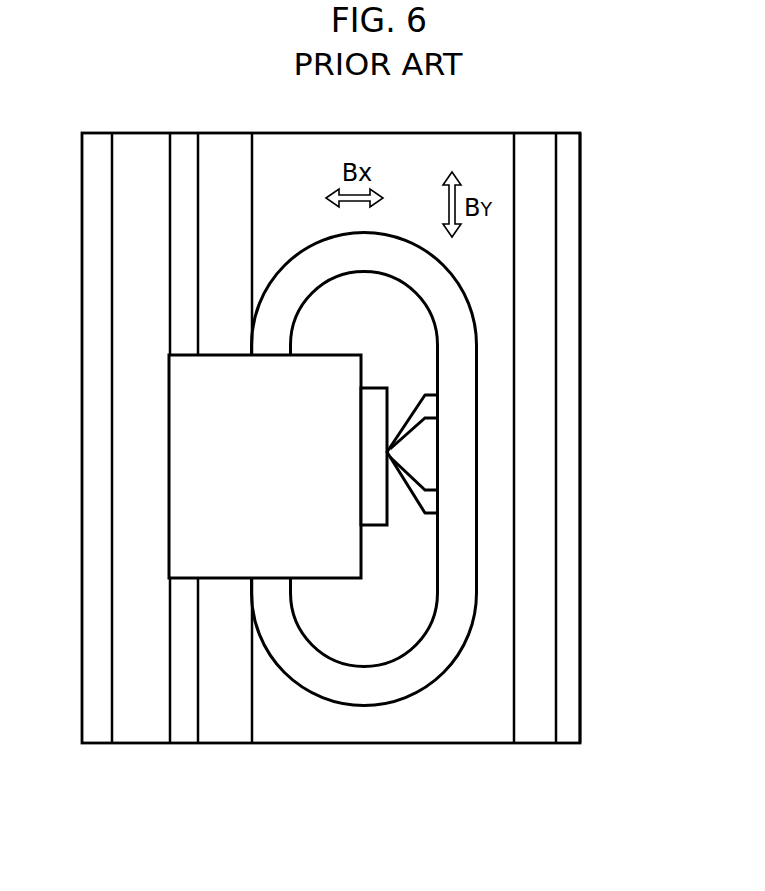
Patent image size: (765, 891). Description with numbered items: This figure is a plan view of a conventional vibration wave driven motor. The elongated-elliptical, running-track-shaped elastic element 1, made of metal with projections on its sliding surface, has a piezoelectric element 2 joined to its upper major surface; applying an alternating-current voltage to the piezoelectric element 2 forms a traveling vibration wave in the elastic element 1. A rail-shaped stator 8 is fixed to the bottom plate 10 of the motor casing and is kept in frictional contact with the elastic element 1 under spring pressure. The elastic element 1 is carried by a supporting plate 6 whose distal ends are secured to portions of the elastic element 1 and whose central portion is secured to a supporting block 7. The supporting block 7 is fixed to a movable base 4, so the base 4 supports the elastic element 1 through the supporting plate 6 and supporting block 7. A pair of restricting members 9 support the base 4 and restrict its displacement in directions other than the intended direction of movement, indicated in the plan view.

The elastic element 1 is at (477, 344).
The piezoelectric element 2 is at (455, 403).
The movable base 4 is at (181, 440).
The supporting plate 6 is at (417, 487).
The supporting block 7 is at (374, 402).
The stator 8 is at (222, 710).
The restricting members 9 is at (533, 598).
The bottom plate 10 is at (567, 672).